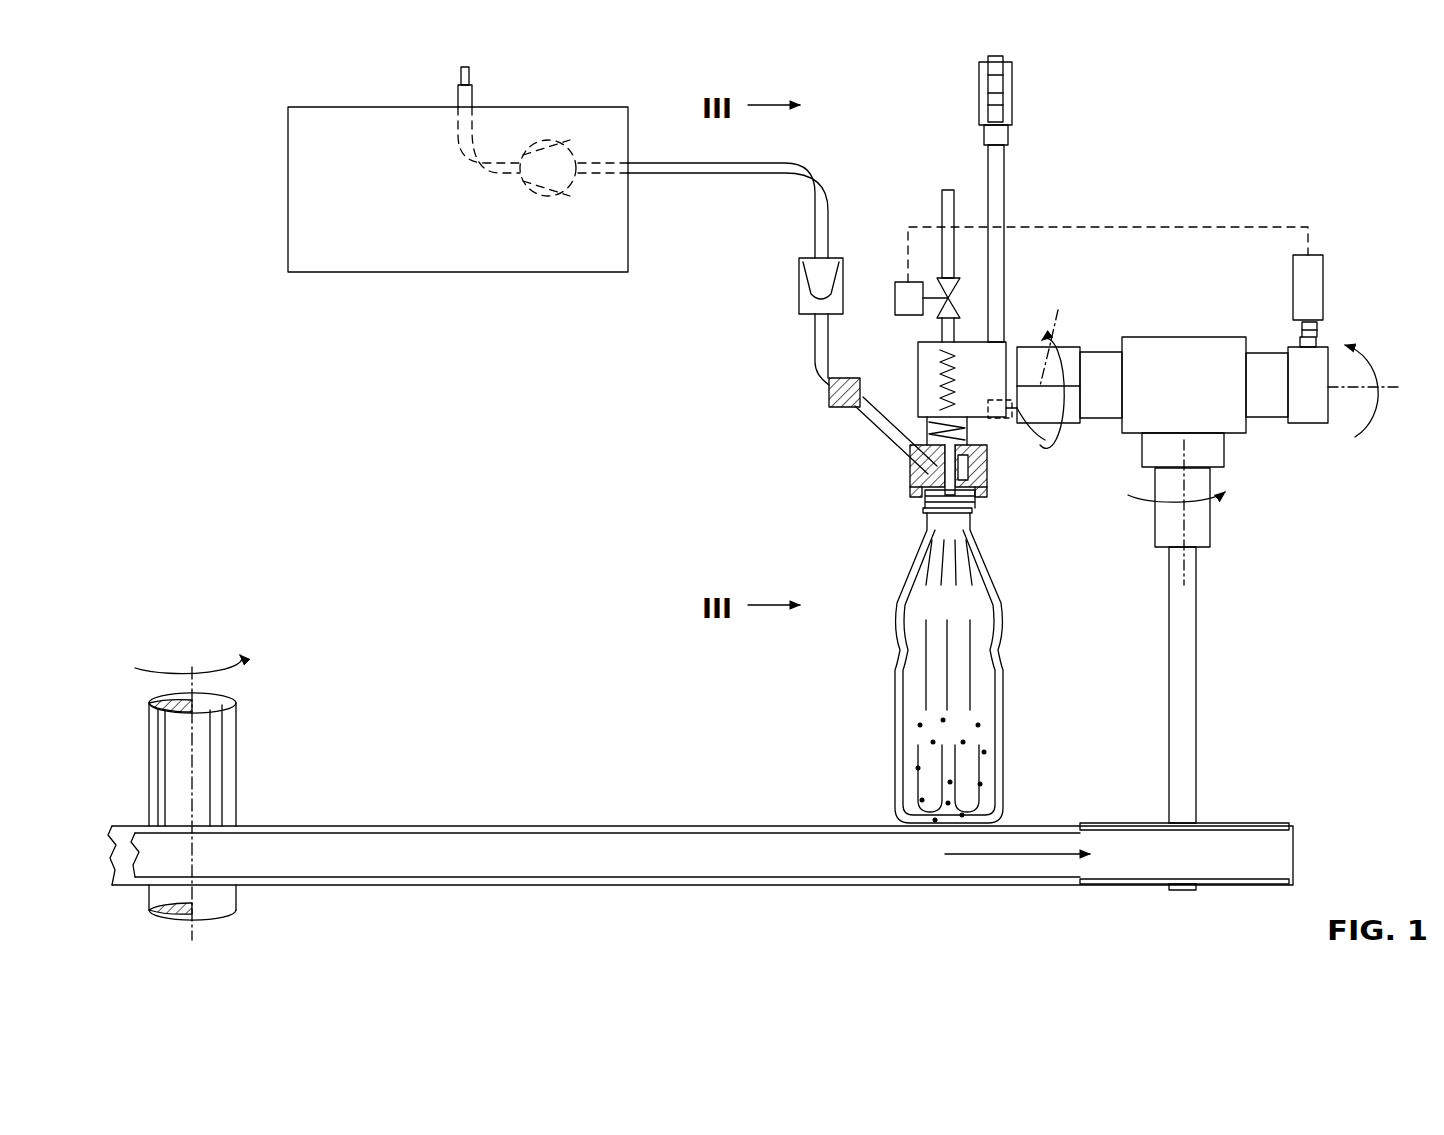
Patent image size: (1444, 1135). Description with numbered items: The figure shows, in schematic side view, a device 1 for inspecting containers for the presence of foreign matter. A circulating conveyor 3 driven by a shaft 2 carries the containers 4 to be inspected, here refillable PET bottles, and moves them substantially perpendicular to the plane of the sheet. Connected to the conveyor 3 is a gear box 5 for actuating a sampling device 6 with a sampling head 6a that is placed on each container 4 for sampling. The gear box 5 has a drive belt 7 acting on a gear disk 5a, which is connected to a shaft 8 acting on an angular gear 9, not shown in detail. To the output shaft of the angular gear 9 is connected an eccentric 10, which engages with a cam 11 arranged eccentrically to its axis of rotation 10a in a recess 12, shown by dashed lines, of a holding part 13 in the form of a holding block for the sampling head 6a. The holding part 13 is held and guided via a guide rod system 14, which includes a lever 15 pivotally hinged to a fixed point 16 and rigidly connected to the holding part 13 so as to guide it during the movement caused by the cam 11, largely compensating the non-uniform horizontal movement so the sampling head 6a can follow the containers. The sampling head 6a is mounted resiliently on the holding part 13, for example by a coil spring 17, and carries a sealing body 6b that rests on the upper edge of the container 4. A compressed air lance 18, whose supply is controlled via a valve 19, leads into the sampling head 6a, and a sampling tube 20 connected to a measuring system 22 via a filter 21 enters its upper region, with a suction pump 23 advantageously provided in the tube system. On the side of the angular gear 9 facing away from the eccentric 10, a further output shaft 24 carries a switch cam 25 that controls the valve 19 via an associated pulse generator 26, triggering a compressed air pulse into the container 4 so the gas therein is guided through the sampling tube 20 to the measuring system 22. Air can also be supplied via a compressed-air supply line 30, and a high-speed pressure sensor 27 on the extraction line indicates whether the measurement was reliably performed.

The device 1 is at (180, 284).
The shaft 2 is at (236, 756).
The circulating conveyor 3 is at (392, 826).
The container 4 is at (1003, 682).
The gear box 5 is at (1240, 205).
The gear disk 5a is at (1243, 823).
The sampling device 6 is at (798, 490).
The sampling head 6a is at (975, 482).
The sealing body 6b is at (910, 492).
The drive belt 7 is at (481, 845).
The shaft 8 is at (1196, 683).
The angular gear 9 is at (1183, 337).
The eccentric 10 is at (1070, 347).
The axis of rotation 10a is at (1063, 363).
The cam 11 is at (1045, 440).
The recess 12 is at (1008, 422).
The holding part 13 is at (918, 350).
The guide rod system 14 is at (1050, 150).
The lever 15 is at (1012, 80).
The fixed point 16 is at (1004, 195).
The coil spring 17 is at (968, 440).
The compressed air lance 18 is at (908, 476).
The valve 19 is at (938, 278).
The sampling tube 20 is at (815, 345).
The filter 21 is at (799, 290).
The measuring system 22 is at (460, 272).
The suction pump 23 is at (543, 135).
The further output shaft 24 is at (1268, 408).
The switch cam 25 is at (1318, 328).
The pulse generator 26 is at (1323, 262).
The high-speed pressure sensor 27 is at (829, 400).
The compressed-air supply line 30 is at (898, 152).